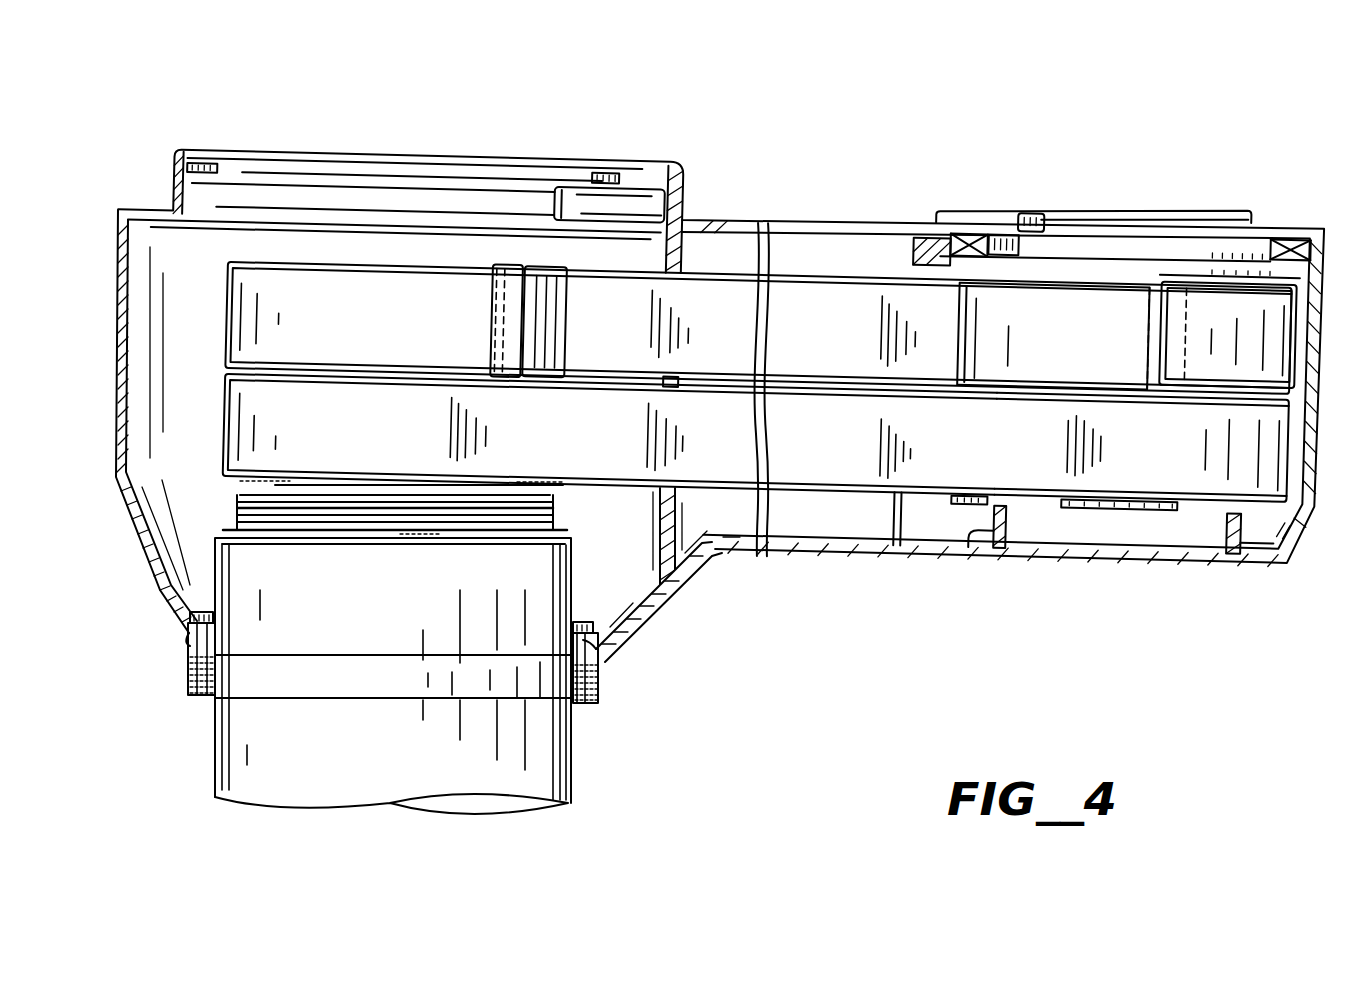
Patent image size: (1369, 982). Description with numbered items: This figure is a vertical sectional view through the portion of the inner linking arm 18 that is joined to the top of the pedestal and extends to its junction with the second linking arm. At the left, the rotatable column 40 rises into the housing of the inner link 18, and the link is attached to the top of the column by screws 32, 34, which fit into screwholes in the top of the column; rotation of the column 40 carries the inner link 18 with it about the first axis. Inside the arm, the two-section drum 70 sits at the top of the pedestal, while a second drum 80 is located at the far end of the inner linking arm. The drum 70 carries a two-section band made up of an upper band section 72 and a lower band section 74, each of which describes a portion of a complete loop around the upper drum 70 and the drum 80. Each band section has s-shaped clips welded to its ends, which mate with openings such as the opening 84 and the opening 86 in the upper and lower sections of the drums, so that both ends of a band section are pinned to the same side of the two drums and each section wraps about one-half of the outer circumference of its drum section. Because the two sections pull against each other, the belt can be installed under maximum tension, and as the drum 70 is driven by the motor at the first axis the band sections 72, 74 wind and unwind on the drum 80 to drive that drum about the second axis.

The inner link 18 is at (816, 158).
The two-section drum 70 is at (399, 255).
The opening 84 is at (517, 265).
The drum 80 is at (1056, 272).
The opening 86 is at (1174, 283).
The band section 72 is at (830, 336).
The lower band section 74 is at (1034, 437).
The screw 32 is at (187, 637).
The screw 34 is at (597, 642).
The rotatable column 40 is at (573, 801).